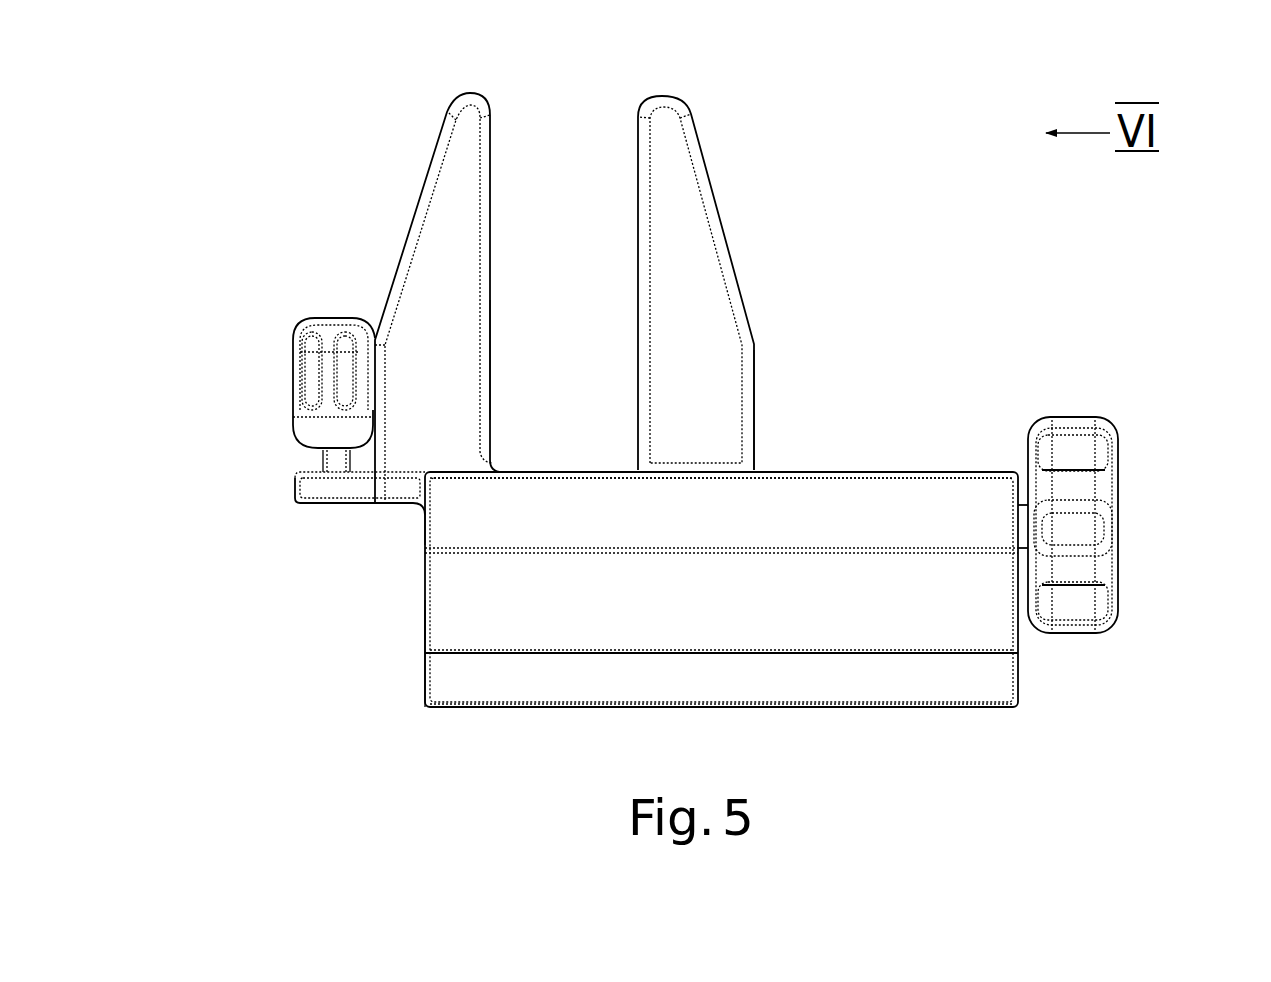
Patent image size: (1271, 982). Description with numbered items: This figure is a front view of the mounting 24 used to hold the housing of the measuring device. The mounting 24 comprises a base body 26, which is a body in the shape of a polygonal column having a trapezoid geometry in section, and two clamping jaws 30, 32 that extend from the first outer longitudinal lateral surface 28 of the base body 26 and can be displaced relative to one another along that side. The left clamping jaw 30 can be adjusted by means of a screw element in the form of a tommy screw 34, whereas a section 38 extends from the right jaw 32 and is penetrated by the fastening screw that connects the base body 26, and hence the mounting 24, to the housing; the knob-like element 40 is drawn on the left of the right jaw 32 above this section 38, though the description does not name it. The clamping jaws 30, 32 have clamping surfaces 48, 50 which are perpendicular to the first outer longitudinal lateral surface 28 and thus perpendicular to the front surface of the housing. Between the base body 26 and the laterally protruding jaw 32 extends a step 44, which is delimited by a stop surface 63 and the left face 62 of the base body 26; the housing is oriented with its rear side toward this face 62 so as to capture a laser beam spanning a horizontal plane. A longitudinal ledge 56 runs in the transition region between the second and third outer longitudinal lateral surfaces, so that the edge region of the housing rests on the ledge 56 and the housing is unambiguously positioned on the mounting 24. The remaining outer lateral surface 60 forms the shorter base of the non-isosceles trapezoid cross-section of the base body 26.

The mounting 24 is at (220, 116).
The base body 26 is at (460, 612).
The first outer longitudinal lateral surface 28 is at (860, 470).
The clamping jaw 30 is at (690, 310).
The clamping jaw 32 is at (427, 243).
The tommy screw 34 is at (1077, 528).
The section 38 is at (300, 505).
The locking knob 40 is at (307, 328).
The step 44 is at (388, 530).
The clamping surface 48 is at (637, 222).
The clamping surface 50 is at (490, 362).
The longitudinal ledge 56 is at (850, 672).
The remaining outer lateral surface 60 is at (932, 483).
The face 62 is at (420, 627).
The stop surface 63 is at (347, 505).